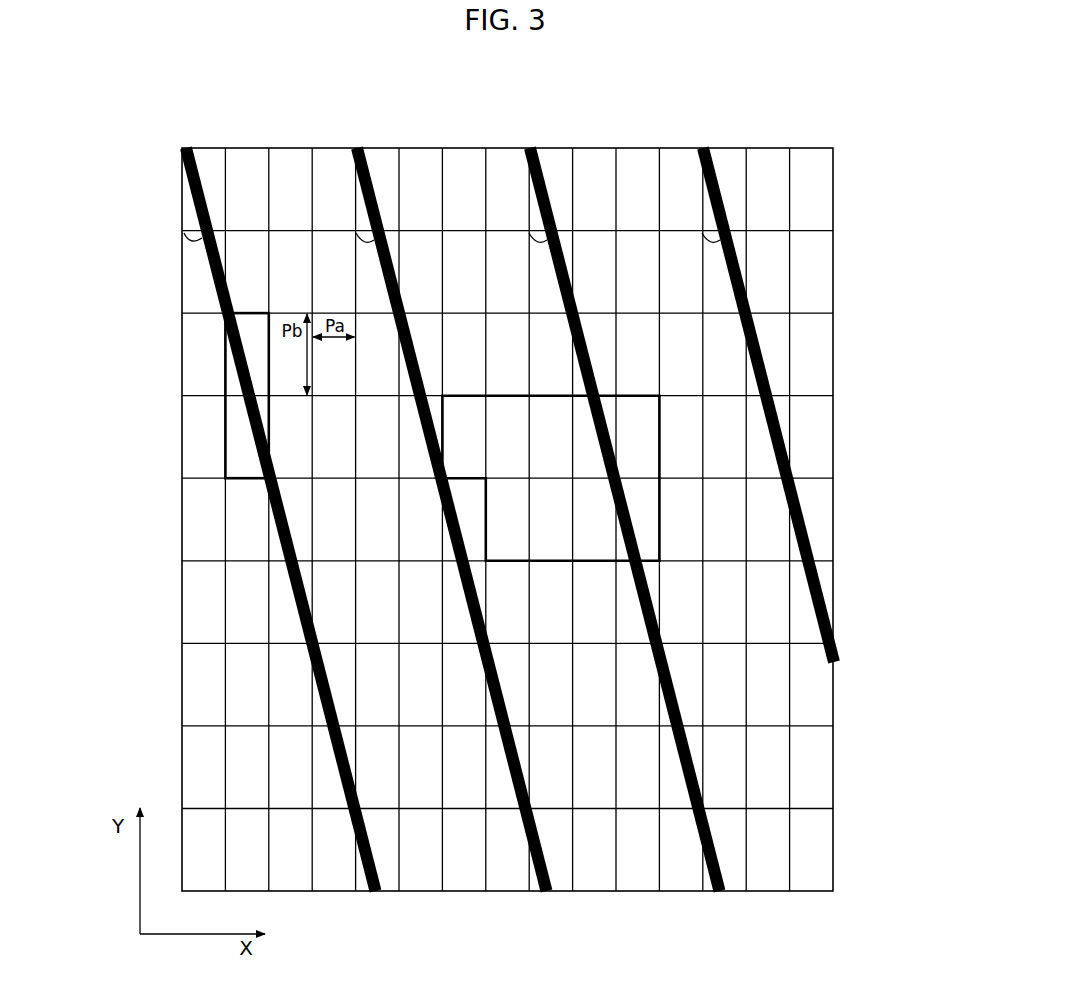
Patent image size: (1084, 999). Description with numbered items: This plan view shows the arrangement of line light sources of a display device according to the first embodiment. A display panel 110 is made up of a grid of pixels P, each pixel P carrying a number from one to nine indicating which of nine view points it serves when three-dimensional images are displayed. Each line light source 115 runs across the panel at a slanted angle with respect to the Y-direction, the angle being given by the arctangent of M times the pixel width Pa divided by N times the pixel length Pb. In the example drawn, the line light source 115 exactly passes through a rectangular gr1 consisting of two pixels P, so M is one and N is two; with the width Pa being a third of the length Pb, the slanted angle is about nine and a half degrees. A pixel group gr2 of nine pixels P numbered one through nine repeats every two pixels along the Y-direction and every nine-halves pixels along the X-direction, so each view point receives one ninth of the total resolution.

The display panel 110 is at (832, 128).
The line light source 115 is at (192, 214).
The rectangular gr1 is at (214, 378).
The pixel group gr2 is at (660, 545).
The pixel P is at (821, 378).